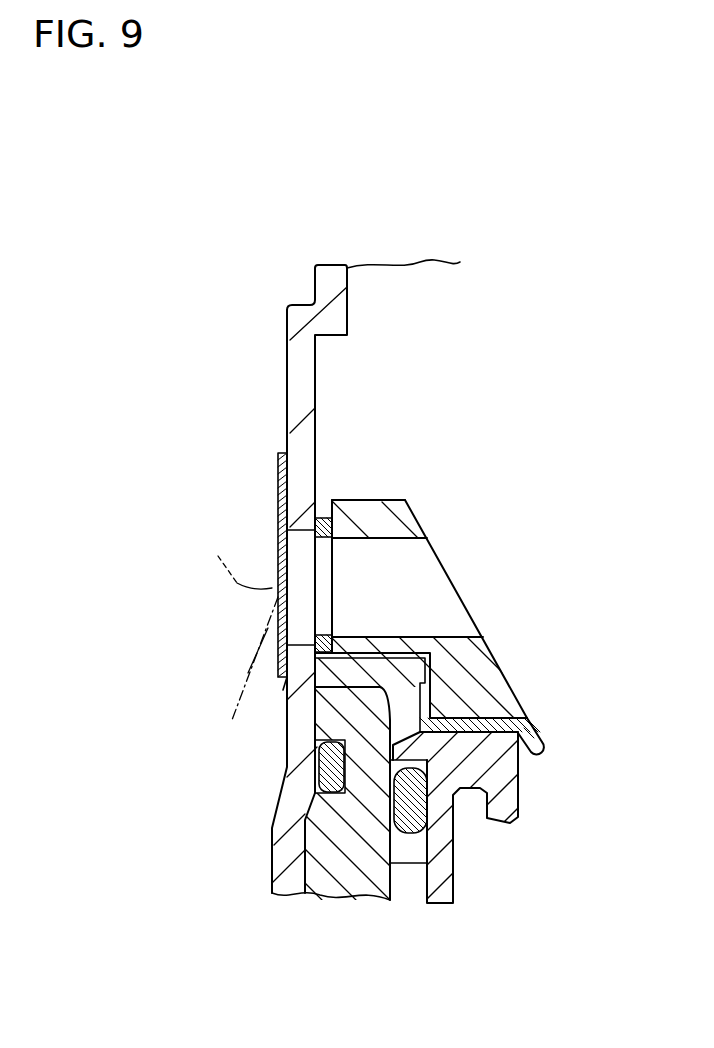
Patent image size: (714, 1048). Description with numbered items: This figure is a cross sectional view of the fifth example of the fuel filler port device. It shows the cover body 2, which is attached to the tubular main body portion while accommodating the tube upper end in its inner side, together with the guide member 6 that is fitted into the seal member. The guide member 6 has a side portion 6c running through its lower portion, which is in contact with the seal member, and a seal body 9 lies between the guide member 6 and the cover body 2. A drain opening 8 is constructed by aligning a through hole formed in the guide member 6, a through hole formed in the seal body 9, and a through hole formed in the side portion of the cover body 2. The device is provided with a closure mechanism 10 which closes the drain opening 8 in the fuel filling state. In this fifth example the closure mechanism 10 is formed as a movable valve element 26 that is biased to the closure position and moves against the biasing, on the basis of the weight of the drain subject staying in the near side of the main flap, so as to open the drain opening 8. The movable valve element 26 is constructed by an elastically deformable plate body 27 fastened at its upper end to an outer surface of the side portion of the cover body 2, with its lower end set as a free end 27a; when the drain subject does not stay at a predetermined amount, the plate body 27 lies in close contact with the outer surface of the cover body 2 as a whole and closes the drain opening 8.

The cover body 2 is at (318, 287).
The guide member 6 is at (400, 498).
The side portion 6c is at (363, 500).
The drain opening 8 is at (300, 608).
The seal body 9 is at (320, 517).
The closure mechanism 10 is at (267, 560).
The movable valve element 26 is at (280, 680).
The elastically deformable plate body 27 is at (290, 583).
The free end 27a is at (283, 690).